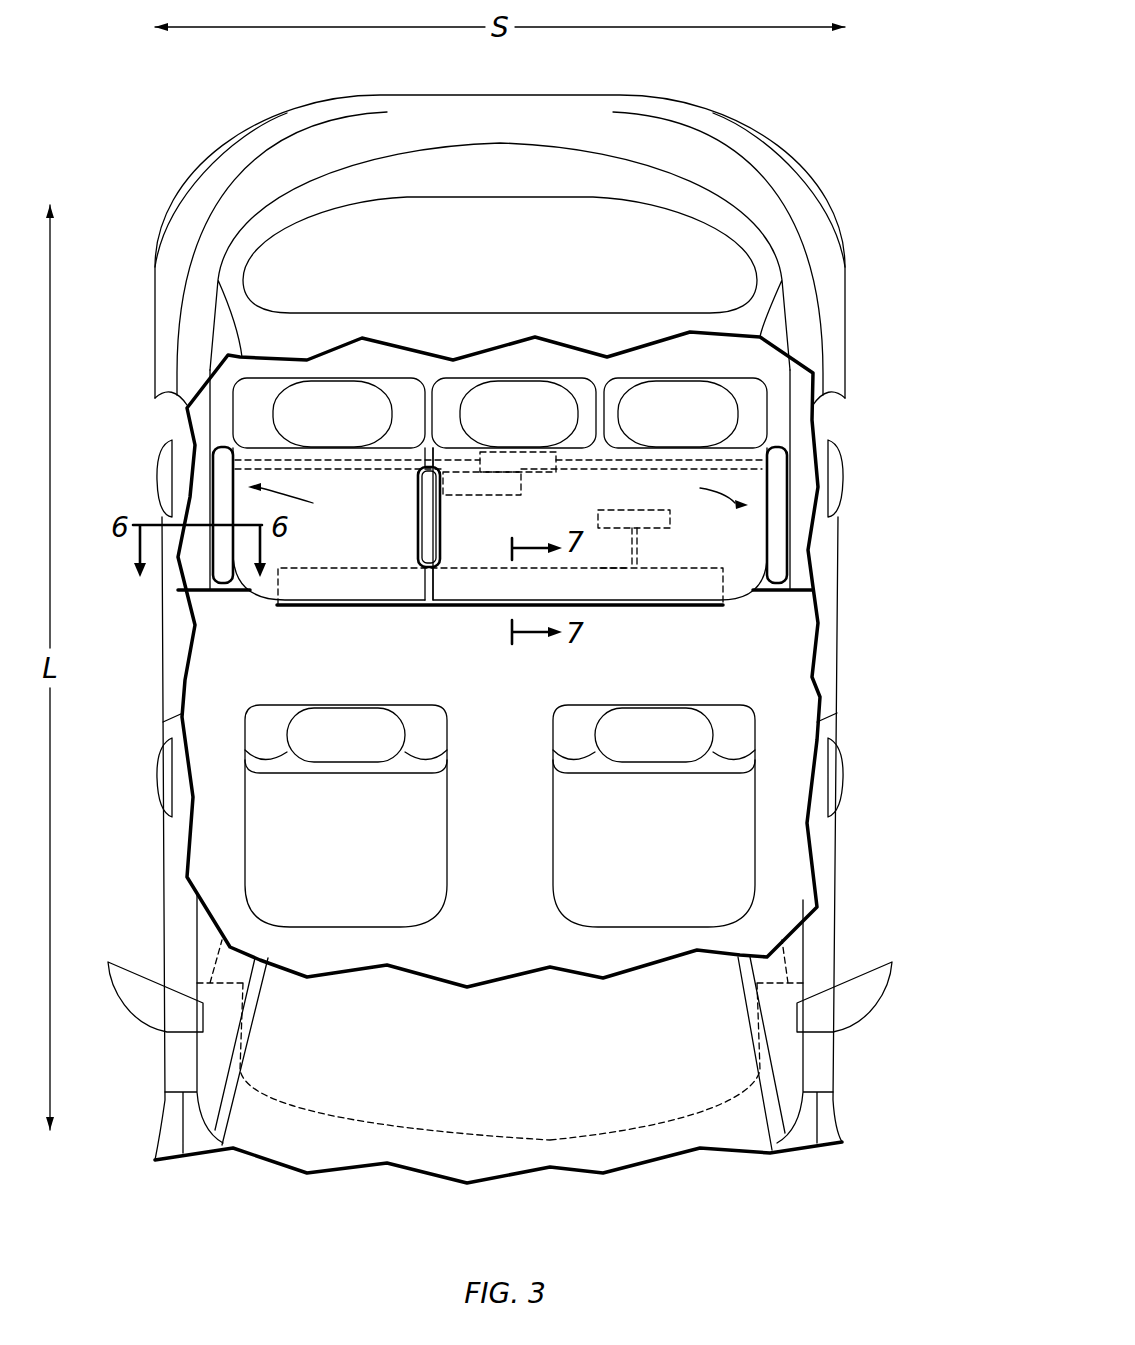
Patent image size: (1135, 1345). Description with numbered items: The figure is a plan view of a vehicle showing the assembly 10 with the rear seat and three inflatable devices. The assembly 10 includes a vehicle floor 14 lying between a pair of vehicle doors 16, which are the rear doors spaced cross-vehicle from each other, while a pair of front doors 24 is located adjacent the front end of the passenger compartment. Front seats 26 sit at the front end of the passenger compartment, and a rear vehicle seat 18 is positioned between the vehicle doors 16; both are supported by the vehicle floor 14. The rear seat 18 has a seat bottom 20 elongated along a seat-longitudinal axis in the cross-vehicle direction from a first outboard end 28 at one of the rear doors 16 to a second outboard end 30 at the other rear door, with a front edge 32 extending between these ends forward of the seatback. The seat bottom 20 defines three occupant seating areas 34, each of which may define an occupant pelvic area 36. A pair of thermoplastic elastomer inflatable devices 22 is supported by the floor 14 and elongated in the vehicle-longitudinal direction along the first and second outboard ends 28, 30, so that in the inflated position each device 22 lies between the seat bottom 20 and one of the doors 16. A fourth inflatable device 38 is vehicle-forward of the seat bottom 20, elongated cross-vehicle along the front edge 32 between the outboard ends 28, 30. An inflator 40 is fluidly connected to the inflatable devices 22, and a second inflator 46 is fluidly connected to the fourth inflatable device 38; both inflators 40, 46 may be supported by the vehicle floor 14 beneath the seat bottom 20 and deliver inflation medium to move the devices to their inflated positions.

The assembly 10 is at (788, 425).
The vehicle floor 14 is at (797, 572).
The vehicle doors 16 is at (180, 650).
The vehicle seat 18 is at (455, 392).
The seat bottom 20 is at (680, 547).
The inflatable devices 22 is at (223, 475).
The front doors 24 is at (180, 860).
The front seats 26 is at (577, 813).
The first outboard end 28 is at (232, 512).
The second outboard end 30 is at (785, 505).
The front edge 32 is at (470, 606).
The occupant seating area 34 is at (395, 455).
The occupant pelvic area 36 is at (498, 496).
The fourth inflatable device 38 is at (613, 580).
The inflator 40 is at (513, 450).
The second inflator 46 is at (637, 510).